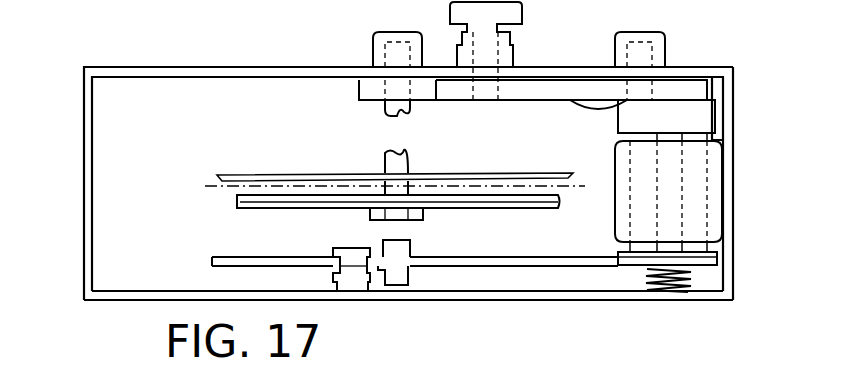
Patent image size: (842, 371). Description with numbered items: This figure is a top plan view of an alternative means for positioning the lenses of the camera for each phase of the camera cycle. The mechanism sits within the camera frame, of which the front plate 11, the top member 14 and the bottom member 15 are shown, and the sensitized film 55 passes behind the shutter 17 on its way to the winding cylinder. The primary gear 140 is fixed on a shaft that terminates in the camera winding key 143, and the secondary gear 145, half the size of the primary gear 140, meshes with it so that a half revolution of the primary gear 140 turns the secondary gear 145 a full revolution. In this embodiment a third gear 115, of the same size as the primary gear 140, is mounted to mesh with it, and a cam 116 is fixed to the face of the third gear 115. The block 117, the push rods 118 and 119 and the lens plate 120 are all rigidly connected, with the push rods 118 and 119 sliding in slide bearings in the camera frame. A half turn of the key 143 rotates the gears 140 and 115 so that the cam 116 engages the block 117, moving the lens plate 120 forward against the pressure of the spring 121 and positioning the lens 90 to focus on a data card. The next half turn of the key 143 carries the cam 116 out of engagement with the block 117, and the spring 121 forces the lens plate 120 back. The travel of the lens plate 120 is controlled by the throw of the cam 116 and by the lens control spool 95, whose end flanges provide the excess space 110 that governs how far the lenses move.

The front plate 11 is at (153, 295).
The top member 14 is at (87, 127).
The bottom member 15 is at (722, 227).
The shutter 17 is at (250, 203).
The sensitized film 55 is at (213, 185).
The lens 90 is at (400, 277).
The lens control spool 95 is at (350, 268).
The space 110 is at (337, 268).
The third gear 115 is at (685, 88).
The cam 116 is at (596, 103).
The block 117 is at (692, 117).
The push rod 118 is at (642, 172).
The push rod 119 is at (693, 202).
The lens plate 120 is at (527, 262).
The spring 121 is at (677, 288).
The primary gear 140 is at (525, 88).
The camera winding key 143 is at (472, 13).
The secondary gear 145 is at (370, 88).